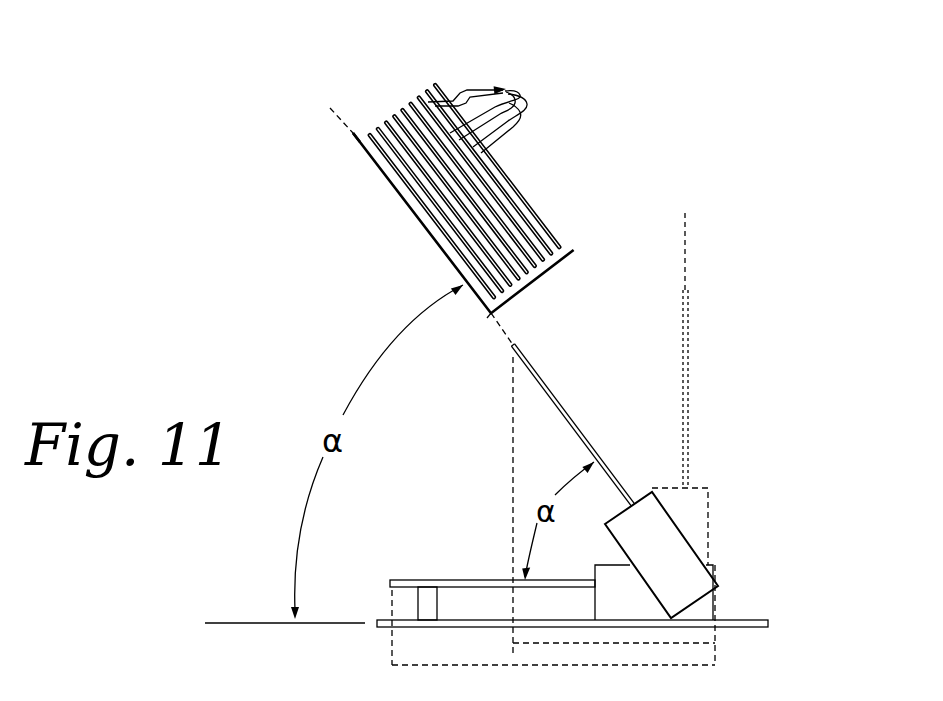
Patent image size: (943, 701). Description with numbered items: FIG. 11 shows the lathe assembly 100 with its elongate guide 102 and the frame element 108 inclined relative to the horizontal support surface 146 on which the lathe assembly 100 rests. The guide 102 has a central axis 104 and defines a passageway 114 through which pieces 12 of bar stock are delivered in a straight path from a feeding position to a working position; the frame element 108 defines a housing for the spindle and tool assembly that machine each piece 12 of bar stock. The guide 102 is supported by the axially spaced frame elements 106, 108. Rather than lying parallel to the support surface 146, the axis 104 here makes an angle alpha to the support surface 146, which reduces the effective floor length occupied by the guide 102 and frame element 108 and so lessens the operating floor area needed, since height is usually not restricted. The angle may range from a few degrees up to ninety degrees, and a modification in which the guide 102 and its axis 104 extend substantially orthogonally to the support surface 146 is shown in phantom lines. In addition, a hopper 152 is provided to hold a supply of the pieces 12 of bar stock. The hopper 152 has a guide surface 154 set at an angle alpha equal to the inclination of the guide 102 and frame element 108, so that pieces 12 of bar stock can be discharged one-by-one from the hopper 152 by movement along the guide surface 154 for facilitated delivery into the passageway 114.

The lathe assembly 100 is at (495, 174).
The piece of bar stock 12 is at (483, 115).
The hopper 152 is at (353, 133).
The guide surface 154 is at (428, 231).
The central axis 104 is at (500, 326).
The elongate guide 102 is at (540, 373).
The passageway 114 is at (578, 428).
The frame element 108 is at (668, 513).
The horizontal support surface 146 is at (476, 620).
The frame element 106 is at (437, 603).